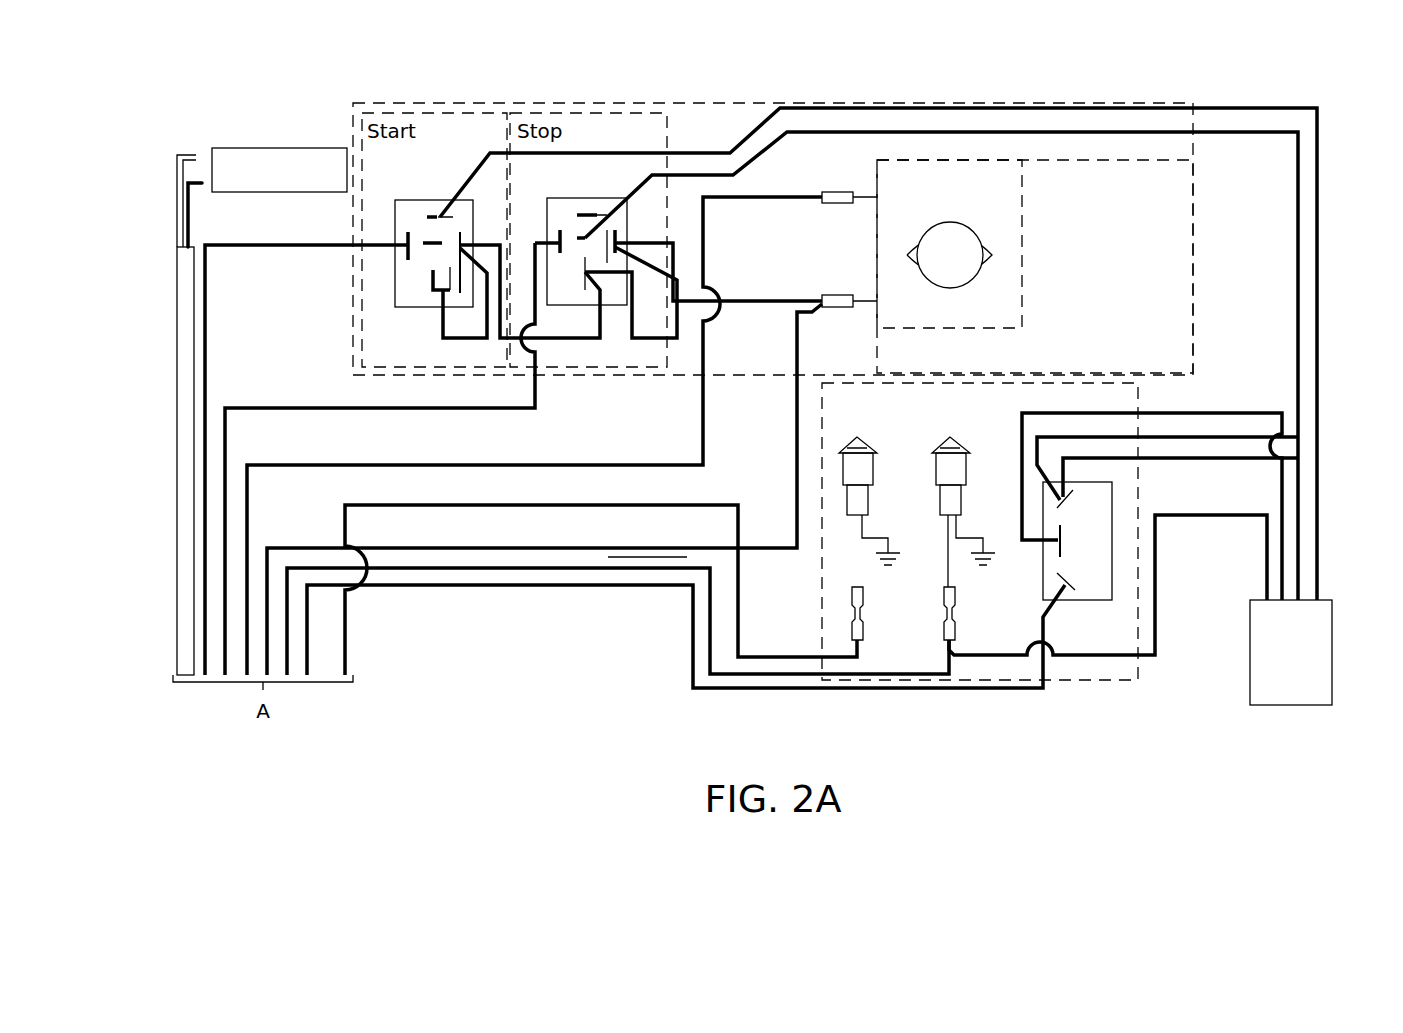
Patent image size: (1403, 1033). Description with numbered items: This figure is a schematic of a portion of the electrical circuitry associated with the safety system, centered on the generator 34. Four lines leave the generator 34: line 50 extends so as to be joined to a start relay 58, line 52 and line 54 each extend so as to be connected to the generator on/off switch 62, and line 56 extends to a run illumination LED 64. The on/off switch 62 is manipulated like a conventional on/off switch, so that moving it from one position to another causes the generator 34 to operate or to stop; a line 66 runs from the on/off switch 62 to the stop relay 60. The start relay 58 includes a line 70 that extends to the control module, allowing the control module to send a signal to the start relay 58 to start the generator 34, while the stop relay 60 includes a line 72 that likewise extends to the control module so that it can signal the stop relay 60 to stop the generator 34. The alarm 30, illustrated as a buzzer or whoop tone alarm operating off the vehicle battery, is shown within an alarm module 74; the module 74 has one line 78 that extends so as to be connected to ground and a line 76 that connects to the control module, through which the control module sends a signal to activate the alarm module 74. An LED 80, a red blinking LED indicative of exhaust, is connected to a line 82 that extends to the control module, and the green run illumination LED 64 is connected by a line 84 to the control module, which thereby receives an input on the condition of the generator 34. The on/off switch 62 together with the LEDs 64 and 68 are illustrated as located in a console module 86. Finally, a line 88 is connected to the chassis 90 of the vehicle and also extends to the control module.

The alarm 30 is at (941, 223).
The generator 34 is at (1248, 683).
The line 50 is at (1320, 560).
The line 52 is at (1300, 532).
The line 54 is at (1280, 492).
The line 56 is at (1266, 565).
The start relay 58 is at (415, 204).
The stop relay 60 is at (553, 213).
The generator on/off switch 62 is at (1087, 586).
The run illumination LED 64 is at (963, 485).
The line 66 is at (1205, 412).
The LED 68 is at (1003, 690).
The line 70 is at (300, 248).
The line 72 is at (510, 414).
The alarm module 74 is at (1022, 272).
The line 76 is at (795, 196).
The line 78 is at (795, 412).
The LED 80 is at (873, 485).
The line 82 is at (742, 597).
The line 84 is at (920, 673).
The console module 86 is at (1125, 682).
The line 88 is at (177, 354).
The chassis 90 is at (284, 148).